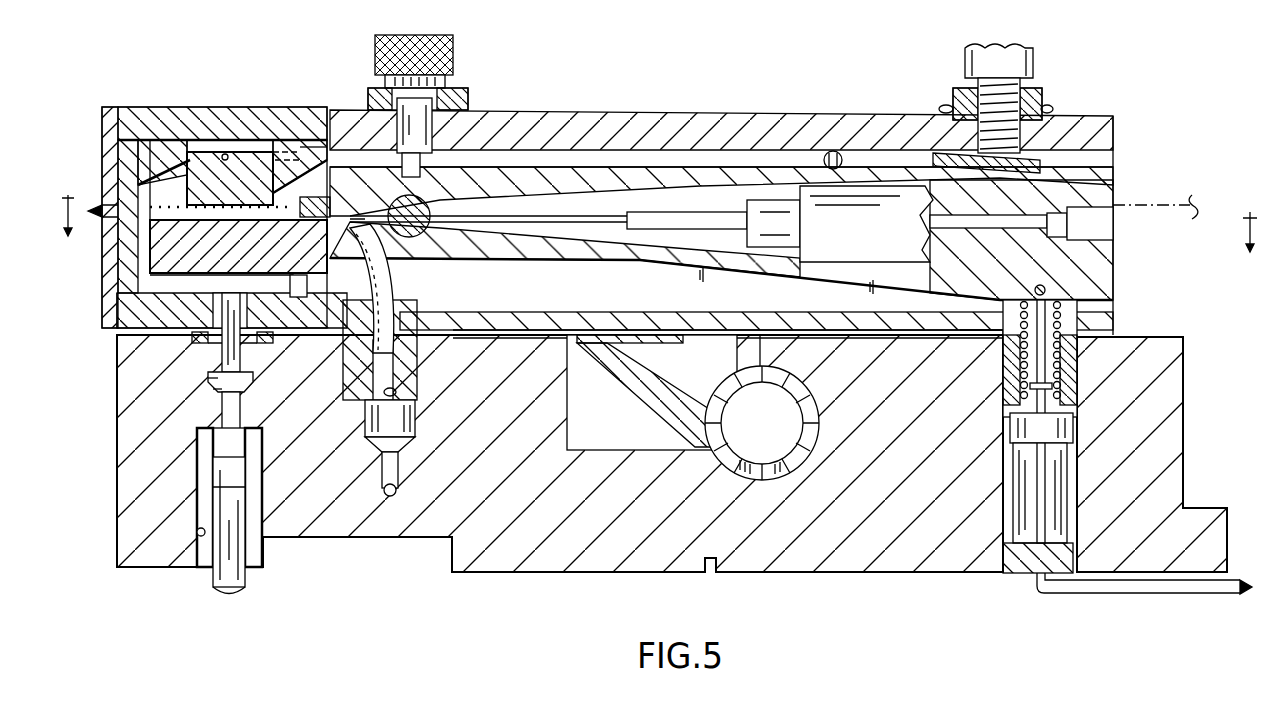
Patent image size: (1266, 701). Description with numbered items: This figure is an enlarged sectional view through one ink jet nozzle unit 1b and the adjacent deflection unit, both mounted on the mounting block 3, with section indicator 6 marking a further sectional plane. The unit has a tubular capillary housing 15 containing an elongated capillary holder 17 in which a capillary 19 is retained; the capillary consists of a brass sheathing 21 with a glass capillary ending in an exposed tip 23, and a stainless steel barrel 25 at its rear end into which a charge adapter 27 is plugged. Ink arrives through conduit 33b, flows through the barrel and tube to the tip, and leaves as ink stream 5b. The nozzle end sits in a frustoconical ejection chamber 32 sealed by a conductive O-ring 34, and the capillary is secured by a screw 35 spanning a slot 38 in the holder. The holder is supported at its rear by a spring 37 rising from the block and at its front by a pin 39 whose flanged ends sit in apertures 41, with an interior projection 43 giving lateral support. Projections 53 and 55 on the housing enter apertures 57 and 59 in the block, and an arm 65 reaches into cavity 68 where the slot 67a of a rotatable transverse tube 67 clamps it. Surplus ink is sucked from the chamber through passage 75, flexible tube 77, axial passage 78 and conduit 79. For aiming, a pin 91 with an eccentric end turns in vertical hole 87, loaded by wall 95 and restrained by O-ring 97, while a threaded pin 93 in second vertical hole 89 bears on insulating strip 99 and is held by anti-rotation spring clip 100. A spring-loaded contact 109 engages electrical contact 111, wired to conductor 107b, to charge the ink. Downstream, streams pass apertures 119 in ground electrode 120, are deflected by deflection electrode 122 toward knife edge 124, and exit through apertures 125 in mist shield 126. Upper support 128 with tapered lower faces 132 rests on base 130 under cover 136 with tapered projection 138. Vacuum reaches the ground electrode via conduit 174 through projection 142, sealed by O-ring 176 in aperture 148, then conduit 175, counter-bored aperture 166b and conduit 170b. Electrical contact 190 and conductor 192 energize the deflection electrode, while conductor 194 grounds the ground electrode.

The nozzle unit 1b is at (794, 110).
The mounting block 3 is at (1190, 437).
The ink stream 5b is at (101, 190).
The section line 6 is at (659, 214).
The tubular capillary housing 15 is at (740, 122).
The capillary holder 17 is at (685, 160).
The capillary 19 is at (608, 214).
The brass sheathing 21 is at (592, 210).
The exposed tip 23 is at (308, 147).
The stainless steel barrel 25 is at (852, 205).
The charge adapter 27 is at (1100, 187).
The frustoconical ejection chamber 32 is at (350, 371).
The conduit 33b is at (1162, 204).
The electrically conductive O-ring 34 is at (333, 196).
The screw 35 is at (1047, 288).
The spring 37 is at (1065, 323).
The slot 38 is at (1095, 291).
The pin 39 is at (480, 182).
The apertures 41 is at (449, 262).
The interior projection 43 is at (975, 329).
The projection 53 is at (1070, 396).
The projection 55 is at (365, 406).
The aperture 57 is at (1073, 426).
The aperture 59 is at (382, 454).
The arm 65 is at (644, 418).
The elongated transverse tube 67 is at (781, 476).
The slot 67a is at (728, 468).
The cavity 68 is at (740, 353).
The passage 75 is at (400, 256).
The flexible tube 77 is at (398, 300).
The axial passage 78 is at (397, 392).
The conduit 79 is at (396, 491).
The vertical hole 87 is at (436, 116).
The second vertical hole 89 is at (1021, 96).
The pin 91 is at (453, 58).
The threaded pin 93 is at (1033, 56).
The wall 95 is at (373, 200).
The O-ring 97 is at (470, 96).
The flexible insulating strip 99 is at (1085, 126).
The anti-rotation spring clip 100 is at (1060, 106).
The conductor 107b is at (1088, 594).
The spring-loaded contact 109 is at (1013, 480).
The electrical contact 111 is at (1016, 578).
The apertures 119 is at (230, 178).
The ground electrode 120 is at (104, 282).
The deflection electrode 122 is at (198, 140).
The knife edge 124 is at (122, 250).
The apertures 125 is at (102, 232).
The mist shield 126 is at (106, 122).
The upper support 128 is at (180, 140).
The base 130 is at (117, 306).
The lower exposed faces 132 is at (237, 234).
The cover 136 is at (213, 140).
The tapered projection 138 is at (150, 140).
The projection 142 is at (210, 376).
The aperture 148 is at (213, 389).
The counter-bored aperture 166b is at (196, 532).
The conduit 170b is at (240, 582).
The conduit 174 is at (220, 346).
The conduit 175 is at (213, 441).
The O-ring 176 is at (192, 338).
The electrical contact 190 is at (232, 140).
The electrical conductor 192 is at (287, 97).
The electrical conductor 194 is at (284, 320).